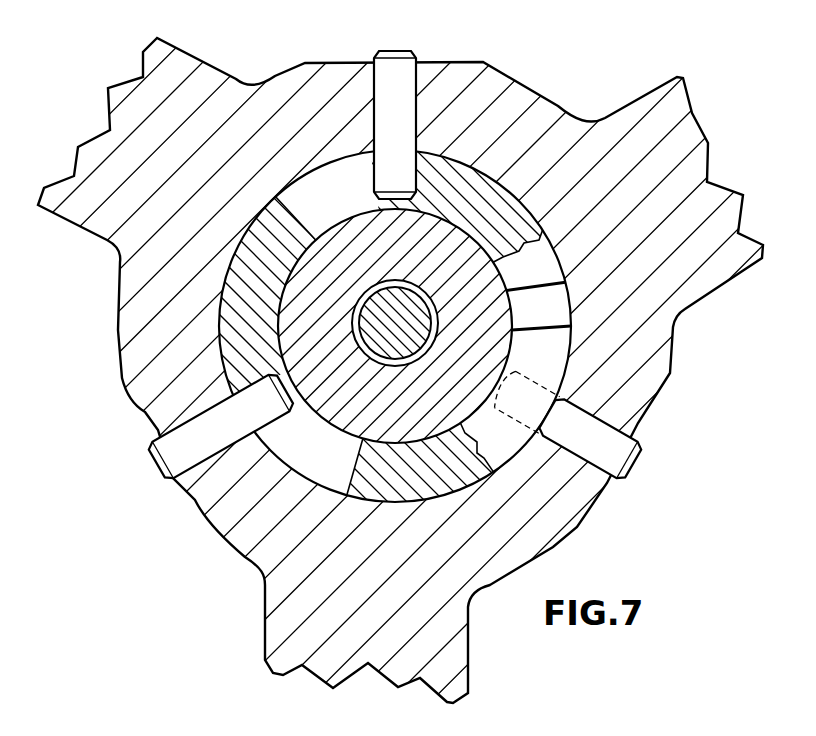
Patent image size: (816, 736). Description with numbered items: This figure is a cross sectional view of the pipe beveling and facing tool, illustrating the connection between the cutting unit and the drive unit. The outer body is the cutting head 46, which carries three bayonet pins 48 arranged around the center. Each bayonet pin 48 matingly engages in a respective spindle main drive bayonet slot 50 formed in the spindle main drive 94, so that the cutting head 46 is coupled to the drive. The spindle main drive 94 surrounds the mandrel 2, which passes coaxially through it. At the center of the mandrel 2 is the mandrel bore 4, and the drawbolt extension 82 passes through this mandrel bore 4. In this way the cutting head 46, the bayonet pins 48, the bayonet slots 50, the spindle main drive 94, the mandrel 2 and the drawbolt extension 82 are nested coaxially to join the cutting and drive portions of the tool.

The mandrel 2 is at (472, 338).
The mandrel bore 4 is at (357, 315).
The cutting head 46 is at (683, 100).
The bayonet pins 48 is at (395, 65).
The spindle main drive bayonet slots 50 is at (350, 163).
The drawbolt extension 82 is at (395, 337).
The spindle main drive 94 is at (490, 193).